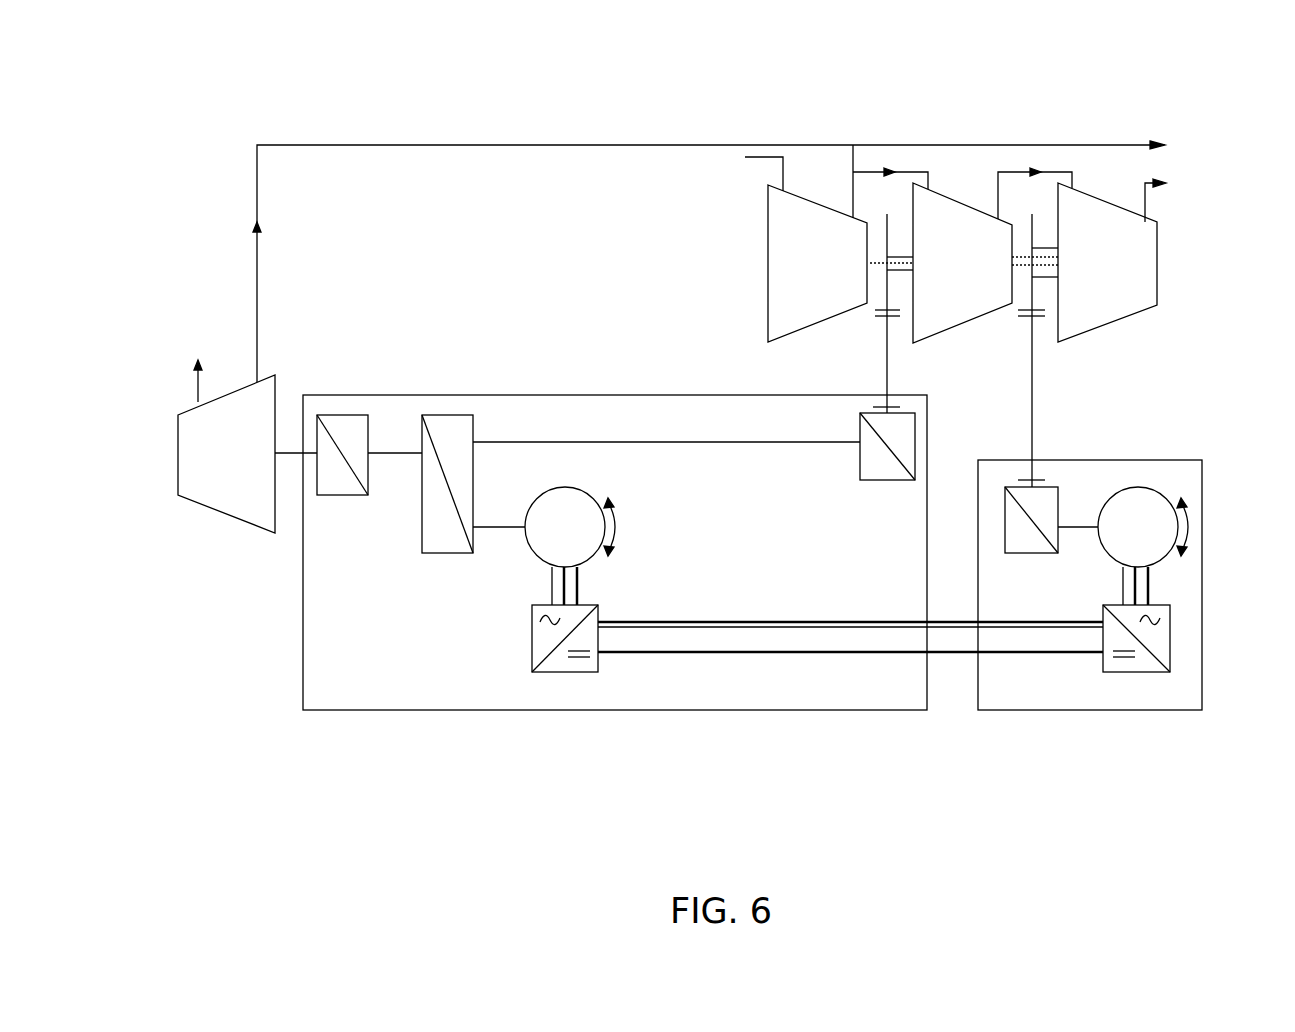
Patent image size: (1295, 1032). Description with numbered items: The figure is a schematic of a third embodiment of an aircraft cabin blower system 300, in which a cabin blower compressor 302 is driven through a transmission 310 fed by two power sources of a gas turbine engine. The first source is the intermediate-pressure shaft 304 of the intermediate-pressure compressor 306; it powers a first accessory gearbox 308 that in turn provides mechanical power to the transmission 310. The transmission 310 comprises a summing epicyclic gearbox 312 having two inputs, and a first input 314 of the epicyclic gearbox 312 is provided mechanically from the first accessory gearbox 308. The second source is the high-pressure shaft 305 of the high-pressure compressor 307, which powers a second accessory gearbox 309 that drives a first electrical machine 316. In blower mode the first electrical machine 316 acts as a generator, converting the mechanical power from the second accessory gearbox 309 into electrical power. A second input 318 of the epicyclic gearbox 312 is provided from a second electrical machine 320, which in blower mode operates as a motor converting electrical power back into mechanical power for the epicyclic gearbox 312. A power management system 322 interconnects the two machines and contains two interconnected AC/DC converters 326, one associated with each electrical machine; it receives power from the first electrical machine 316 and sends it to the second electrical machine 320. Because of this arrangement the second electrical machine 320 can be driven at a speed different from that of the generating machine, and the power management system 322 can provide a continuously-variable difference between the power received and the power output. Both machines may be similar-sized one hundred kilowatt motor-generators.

The aircraft cabin blower system 300 is at (1152, 74).
The cabin blower compressor 302 is at (178, 420).
The intermediate-pressure shaft 304 is at (878, 275).
The high-pressure shaft 305 is at (1021, 265).
The intermediate-pressure compressor 306 is at (915, 185).
The high-pressure compressor 307 is at (1035, 170).
The first accessory gearbox 308 is at (860, 480).
The second accessory gearbox 309 is at (1025, 555).
The transmission 310 is at (344, 534).
The summing epicyclic gearbox 312 is at (422, 553).
The first input 314 is at (484, 434).
The first electrical machine 316 is at (1160, 492).
The second input 318 is at (485, 530).
The second electrical machine 320 is at (572, 488).
The power management system 322 is at (1069, 680).
The AC/DC converters 326 is at (575, 672).